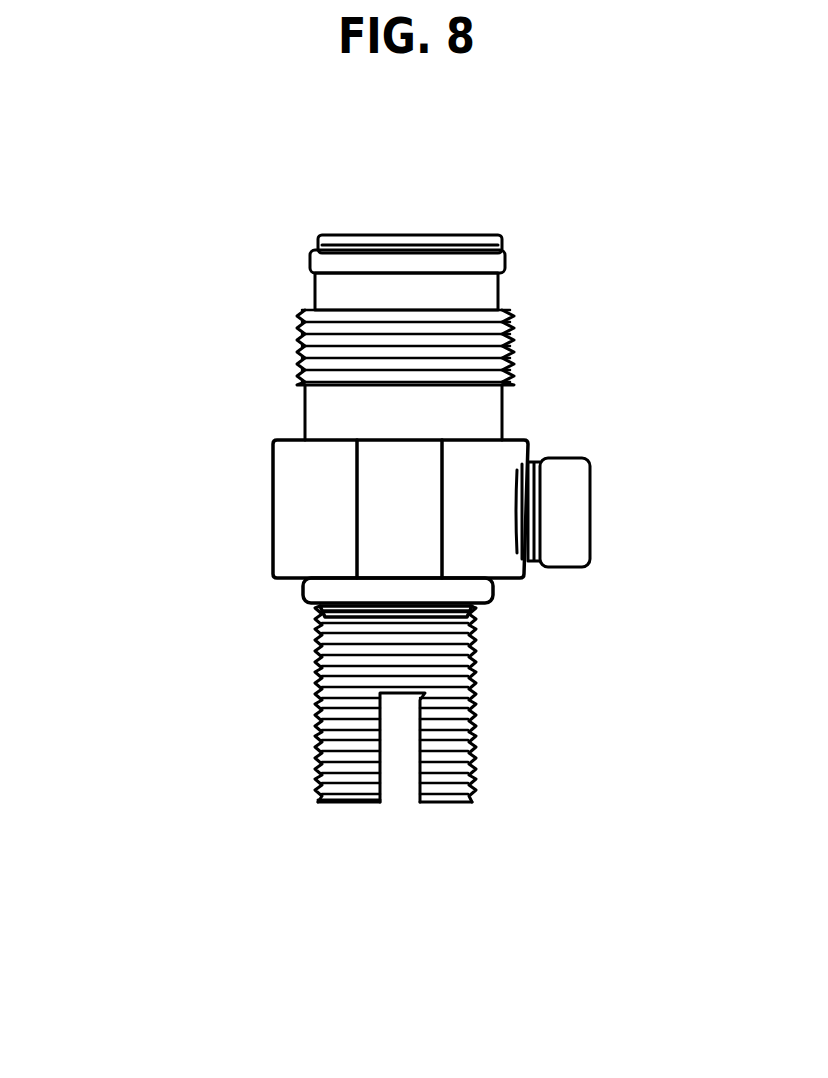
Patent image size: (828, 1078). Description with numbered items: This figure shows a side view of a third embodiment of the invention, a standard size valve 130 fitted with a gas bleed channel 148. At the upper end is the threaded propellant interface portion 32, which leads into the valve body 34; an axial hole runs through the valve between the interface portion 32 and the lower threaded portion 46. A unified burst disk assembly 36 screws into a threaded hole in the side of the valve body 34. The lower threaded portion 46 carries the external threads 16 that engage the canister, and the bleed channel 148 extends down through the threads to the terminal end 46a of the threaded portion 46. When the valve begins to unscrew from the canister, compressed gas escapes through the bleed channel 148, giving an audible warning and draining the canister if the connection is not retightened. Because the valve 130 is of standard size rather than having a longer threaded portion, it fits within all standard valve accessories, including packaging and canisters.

The standard size valve 130 is at (437, 187).
The threaded propellant interface portion 32 is at (266, 299).
The valve body 34 is at (238, 475).
The unified burst disk assembly 36 is at (605, 533).
The threaded portion 46 is at (317, 698).
The threaded portion 16 is at (467, 728).
The terminal end 46a is at (338, 802).
The bleed channel 148 is at (397, 780).